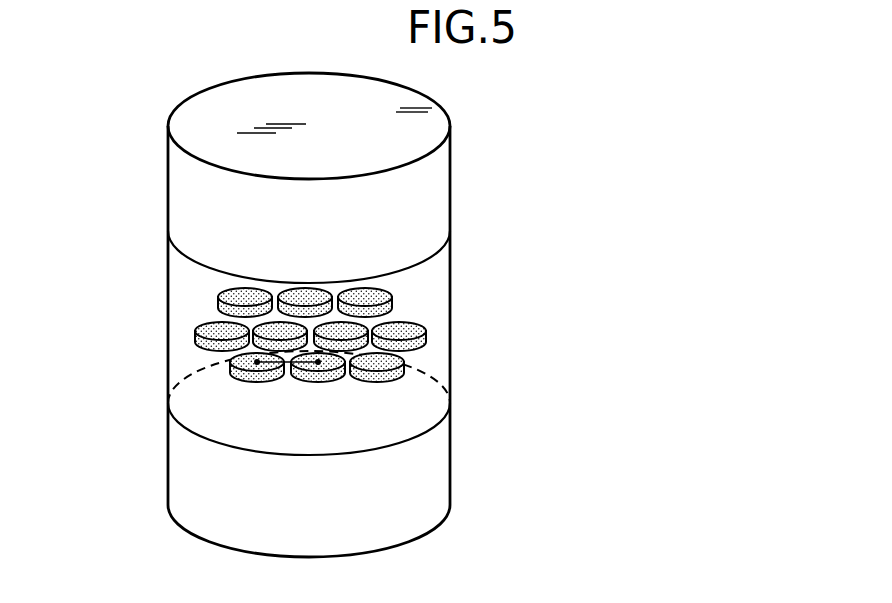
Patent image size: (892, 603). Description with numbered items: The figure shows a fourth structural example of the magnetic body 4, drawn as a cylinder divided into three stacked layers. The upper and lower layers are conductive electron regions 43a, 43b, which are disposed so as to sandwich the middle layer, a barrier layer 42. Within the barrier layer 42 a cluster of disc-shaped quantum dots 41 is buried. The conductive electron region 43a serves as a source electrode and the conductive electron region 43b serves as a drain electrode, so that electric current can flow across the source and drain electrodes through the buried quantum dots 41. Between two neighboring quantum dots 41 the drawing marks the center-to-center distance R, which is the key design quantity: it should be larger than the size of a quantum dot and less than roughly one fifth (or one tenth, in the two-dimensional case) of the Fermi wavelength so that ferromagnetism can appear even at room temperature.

The magnetic body 4 is at (97, 162).
The quantum dot 41 is at (413, 328).
The barrier layer 42 is at (430, 278).
The conductive electron region 43a is at (442, 172).
The conductive electron region 43b is at (440, 477).
The center-to-center distance R is at (262, 366).